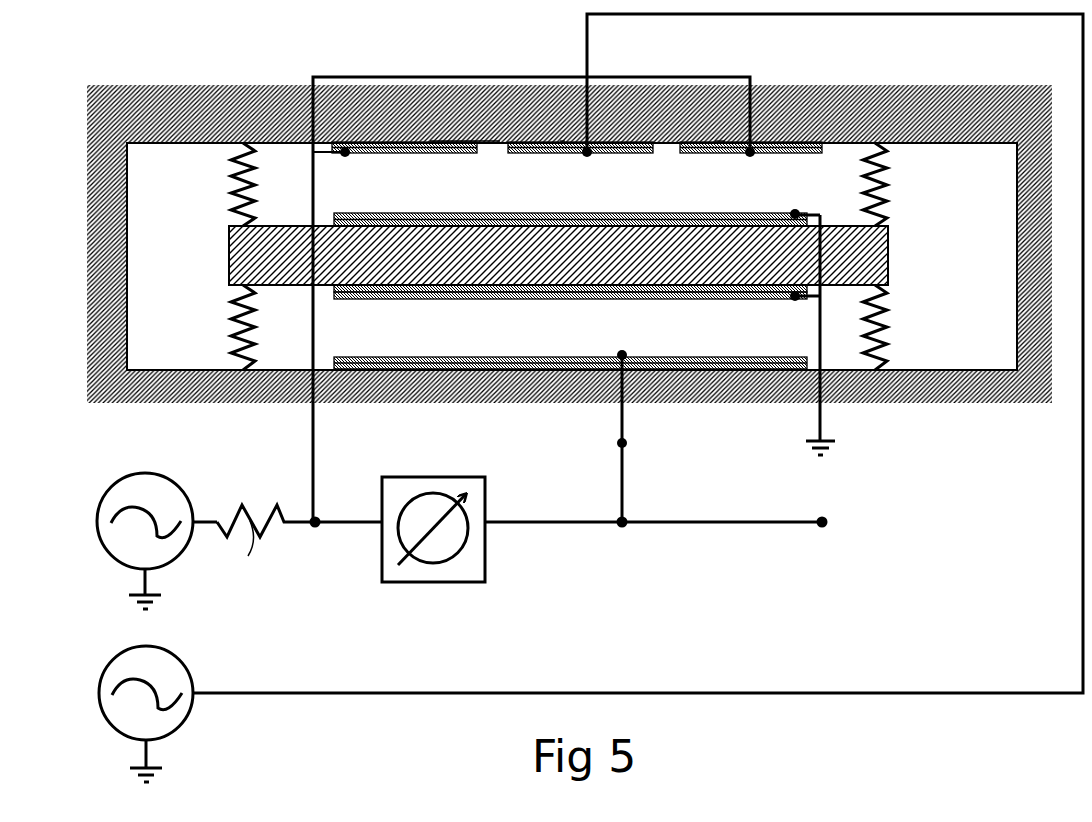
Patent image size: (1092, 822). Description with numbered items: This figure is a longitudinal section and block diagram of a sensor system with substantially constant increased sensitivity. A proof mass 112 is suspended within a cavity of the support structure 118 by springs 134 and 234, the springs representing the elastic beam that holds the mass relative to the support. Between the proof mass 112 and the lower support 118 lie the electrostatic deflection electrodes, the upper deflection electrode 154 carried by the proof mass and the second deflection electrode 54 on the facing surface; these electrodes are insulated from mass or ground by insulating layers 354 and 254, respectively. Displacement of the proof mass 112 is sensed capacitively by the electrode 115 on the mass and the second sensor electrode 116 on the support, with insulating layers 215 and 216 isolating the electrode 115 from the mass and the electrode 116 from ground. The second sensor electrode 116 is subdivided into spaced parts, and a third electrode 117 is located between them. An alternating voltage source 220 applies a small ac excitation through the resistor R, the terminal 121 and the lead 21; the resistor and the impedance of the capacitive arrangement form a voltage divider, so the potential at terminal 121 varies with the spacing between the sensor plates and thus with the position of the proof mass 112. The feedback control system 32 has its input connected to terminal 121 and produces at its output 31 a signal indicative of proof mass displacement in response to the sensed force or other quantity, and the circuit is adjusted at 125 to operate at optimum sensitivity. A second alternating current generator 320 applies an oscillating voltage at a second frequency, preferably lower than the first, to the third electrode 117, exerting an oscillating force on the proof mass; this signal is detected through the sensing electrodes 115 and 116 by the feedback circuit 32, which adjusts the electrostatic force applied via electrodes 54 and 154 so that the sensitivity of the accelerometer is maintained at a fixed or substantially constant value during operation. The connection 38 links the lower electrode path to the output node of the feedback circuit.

The support 118 is at (215, 112).
The proof mass 112 is at (877, 255).
The springs 234 is at (232, 192).
The elastic beam springs 134 is at (232, 336).
The second sensor electrode 116 is at (407, 154).
The third electrode 117 is at (620, 154).
The insulating layer 216 is at (720, 138).
The displacement sensing electrode 115 is at (400, 213).
The insulating layer 215 is at (767, 213).
The deflection electrode 154 is at (530, 299).
The insulating layer 354 is at (455, 298).
The second deflection electrode 54 is at (713, 355).
The insulating layer 254 is at (740, 372).
The lead 21 is at (313, 450).
The second alternating current generator 320 is at (190, 672).
The alternating voltage source 220 is at (190, 505).
The terminal 121 is at (319, 527).
The feedback control system 32 is at (448, 478).
The feedback adjustment 125 is at (445, 565).
The sense line 38 is at (626, 443).
The output 31 is at (828, 519).